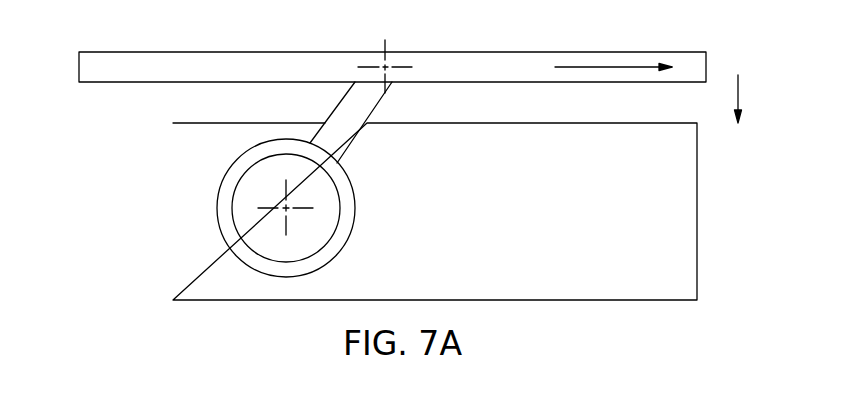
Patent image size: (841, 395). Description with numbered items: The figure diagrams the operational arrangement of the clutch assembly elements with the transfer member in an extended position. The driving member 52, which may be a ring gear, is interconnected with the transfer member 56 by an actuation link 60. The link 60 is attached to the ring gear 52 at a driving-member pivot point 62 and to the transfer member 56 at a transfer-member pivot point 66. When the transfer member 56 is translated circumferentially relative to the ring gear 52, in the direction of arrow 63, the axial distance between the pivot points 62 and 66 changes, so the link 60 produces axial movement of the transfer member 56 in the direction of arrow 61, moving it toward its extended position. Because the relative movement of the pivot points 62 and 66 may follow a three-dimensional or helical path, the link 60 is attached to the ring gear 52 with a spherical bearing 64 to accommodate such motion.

The driving member 52 is at (173, 222).
The transfer member 56 is at (502, 52).
The actuation link 60 is at (355, 205).
The arrow 61 is at (738, 96).
The driving-member pivot point 62 is at (288, 209).
The arrow 63 is at (606, 67).
The spherical bearing 64 is at (252, 255).
The transfer-member pivot point 66 is at (383, 65).